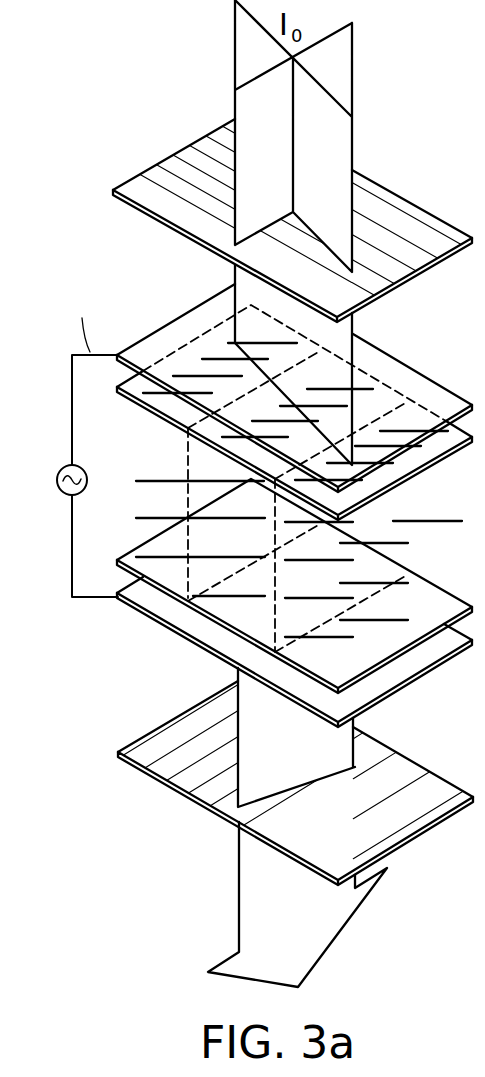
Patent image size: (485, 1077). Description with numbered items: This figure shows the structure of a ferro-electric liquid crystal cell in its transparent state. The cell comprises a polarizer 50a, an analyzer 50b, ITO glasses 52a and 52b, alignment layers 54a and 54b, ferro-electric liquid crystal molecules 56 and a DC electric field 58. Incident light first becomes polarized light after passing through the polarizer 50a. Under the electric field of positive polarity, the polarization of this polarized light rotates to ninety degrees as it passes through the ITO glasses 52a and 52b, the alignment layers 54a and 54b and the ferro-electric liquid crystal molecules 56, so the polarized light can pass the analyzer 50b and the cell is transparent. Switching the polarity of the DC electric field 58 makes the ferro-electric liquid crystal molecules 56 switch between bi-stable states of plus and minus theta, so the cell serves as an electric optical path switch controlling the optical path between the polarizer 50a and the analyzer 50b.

The polarizer 50a is at (142, 170).
The ITO glass 52a is at (150, 335).
The alignment layer 54a is at (185, 443).
The ferro-electric liquid crystal molecules 56 is at (162, 476).
The alignment layer 54b is at (118, 560).
The ITO glass 52b is at (130, 605).
The analyzer 50b is at (145, 770).
The DC electric field 58 is at (62, 462).